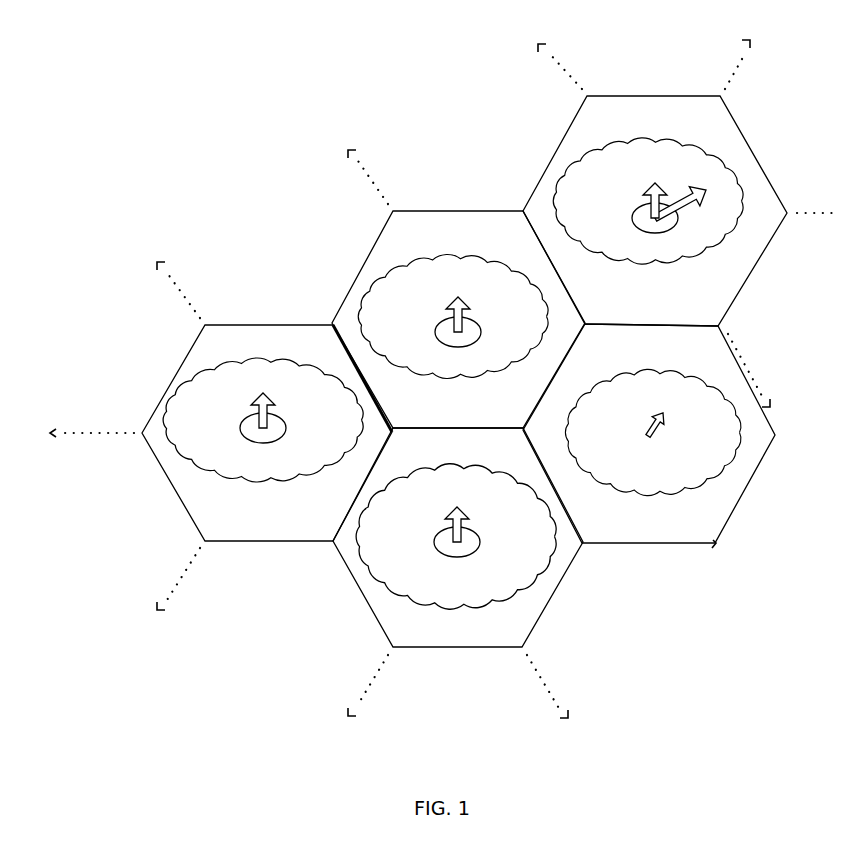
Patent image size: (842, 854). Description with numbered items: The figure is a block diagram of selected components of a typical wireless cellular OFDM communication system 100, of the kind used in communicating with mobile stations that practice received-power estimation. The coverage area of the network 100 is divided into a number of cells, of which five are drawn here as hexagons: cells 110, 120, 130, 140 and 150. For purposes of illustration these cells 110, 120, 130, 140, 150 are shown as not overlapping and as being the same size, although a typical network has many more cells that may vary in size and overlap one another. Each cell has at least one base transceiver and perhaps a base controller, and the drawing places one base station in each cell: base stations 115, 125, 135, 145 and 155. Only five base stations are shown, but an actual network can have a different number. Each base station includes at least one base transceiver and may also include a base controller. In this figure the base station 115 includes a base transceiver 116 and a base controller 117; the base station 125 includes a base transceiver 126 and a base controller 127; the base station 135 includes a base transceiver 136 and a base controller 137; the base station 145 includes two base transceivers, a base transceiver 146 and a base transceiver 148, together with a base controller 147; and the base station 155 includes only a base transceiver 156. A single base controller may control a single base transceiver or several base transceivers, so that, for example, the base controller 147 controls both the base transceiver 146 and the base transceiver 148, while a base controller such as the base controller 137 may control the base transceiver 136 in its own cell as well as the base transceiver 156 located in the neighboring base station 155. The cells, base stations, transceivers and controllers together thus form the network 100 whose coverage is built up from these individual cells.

The wireless cellular OFDM communication system 100 is at (138, 228).
The cell 110 is at (270, 540).
The base station 115 is at (351, 437).
The base transceiver 116 is at (256, 393).
The base controller 117 is at (239, 421).
The cell 120 is at (476, 641).
The base station 125 is at (528, 566).
The base transceiver 126 is at (471, 512).
The base controller 127 is at (435, 540).
The cell 130 is at (465, 424).
The base station 135 is at (540, 339).
The base transceiver 136 is at (446, 305).
The base controller 137 is at (433, 332).
The cell 140 is at (661, 316).
The base station 145 is at (726, 228).
The base transceiver 146 is at (700, 153).
The base controller 147 is at (632, 216).
The base transceiver 148 is at (690, 201).
The cell 150 is at (703, 531).
The base station 155 is at (725, 445).
The base transceiver 156 is at (651, 410).